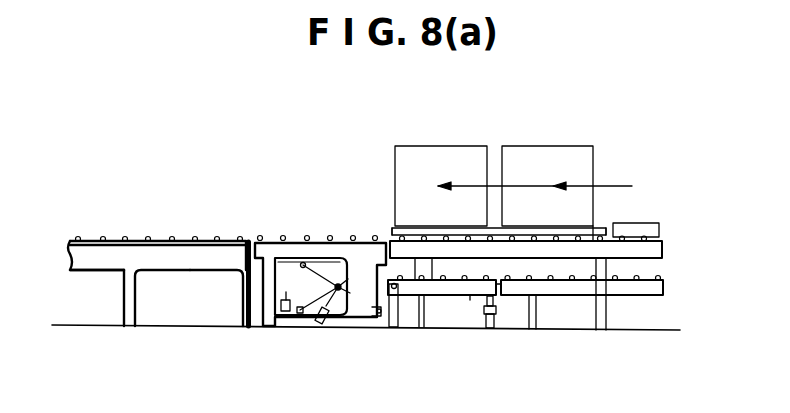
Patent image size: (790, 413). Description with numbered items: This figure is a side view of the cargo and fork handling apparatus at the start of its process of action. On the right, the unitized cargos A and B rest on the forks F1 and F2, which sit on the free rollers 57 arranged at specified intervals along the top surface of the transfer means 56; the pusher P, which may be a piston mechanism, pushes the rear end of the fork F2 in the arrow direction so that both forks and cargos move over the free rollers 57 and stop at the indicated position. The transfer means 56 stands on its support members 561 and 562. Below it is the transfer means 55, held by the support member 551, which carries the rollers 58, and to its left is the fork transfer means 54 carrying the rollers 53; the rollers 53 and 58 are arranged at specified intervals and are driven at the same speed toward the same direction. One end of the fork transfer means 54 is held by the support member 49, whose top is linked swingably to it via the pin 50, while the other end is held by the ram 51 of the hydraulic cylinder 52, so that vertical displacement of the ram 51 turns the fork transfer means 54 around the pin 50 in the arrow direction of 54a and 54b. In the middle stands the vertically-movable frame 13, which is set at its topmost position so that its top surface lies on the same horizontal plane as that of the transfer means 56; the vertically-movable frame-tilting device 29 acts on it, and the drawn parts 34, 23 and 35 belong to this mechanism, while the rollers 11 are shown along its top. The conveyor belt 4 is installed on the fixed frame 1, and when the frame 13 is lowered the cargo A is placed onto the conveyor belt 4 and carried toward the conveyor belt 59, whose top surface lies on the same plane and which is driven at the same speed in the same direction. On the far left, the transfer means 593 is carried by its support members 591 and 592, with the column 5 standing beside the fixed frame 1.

The conveyor belt 59 is at (139, 240).
The transfer means 593 is at (83, 262).
The support member 591 is at (138, 285).
The support member 592 is at (241, 287).
The support column 5 is at (250, 242).
The fixed frame 1 is at (255, 283).
The conveyor belt 4 is at (271, 242).
The transfer rollers 11 is at (288, 238).
The vertically-movable frame 13 is at (320, 262).
The link mechanism 34 is at (314, 287).
The actuating cylinder 23 is at (326, 322).
The vertically-movable frame-tilting device 29 is at (288, 312).
The pivot pin 35 is at (300, 314).
The unitized cargo A is at (441, 186).
The unitized cargo B is at (547, 193).
The rollers 53 is at (490, 280).
The free rollers 57 is at (581, 236).
The fork F1 is at (392, 230).
The fork F2 is at (605, 233).
The pusher P is at (644, 224).
The transfer means 56 is at (664, 247).
The fork transfer means 54 is at (412, 286).
The arrow direction of fork transfer means 54a is at (470, 290).
The arrow direction of fork transfer means 54b is at (466, 302).
The transfer means 55 is at (664, 290).
The rollers 58 is at (640, 279).
The support member 49 is at (400, 317).
The pin 50 is at (389, 283).
The support member 561 is at (427, 313).
The hydraulic cylinder 52 is at (495, 322).
The ram 51 is at (501, 297).
The support member 551 is at (532, 320).
The support member 562 is at (610, 313).